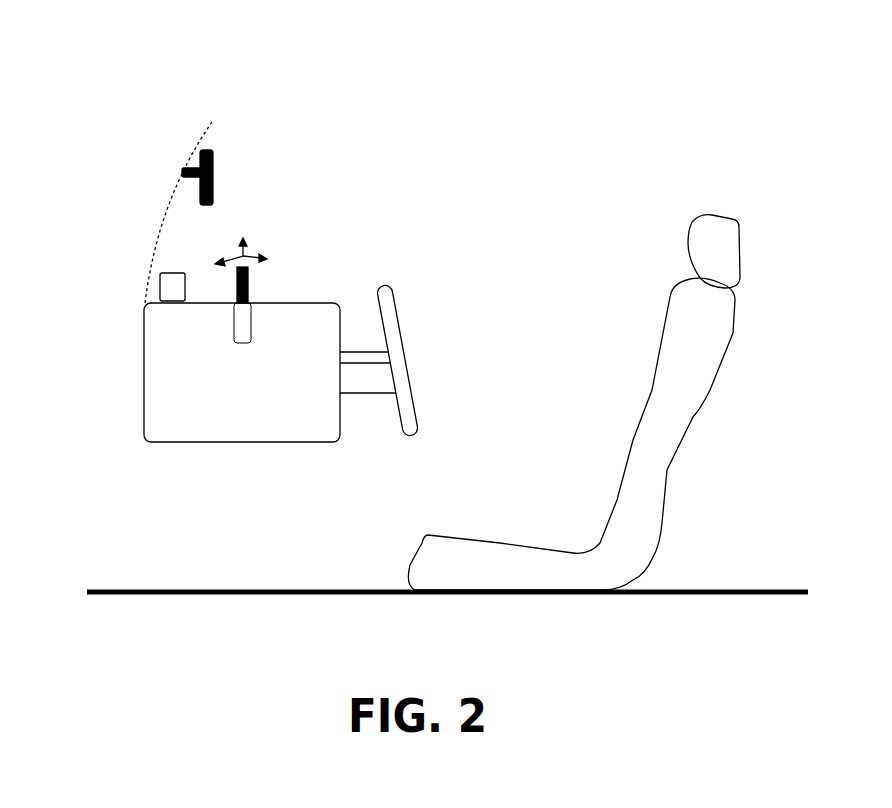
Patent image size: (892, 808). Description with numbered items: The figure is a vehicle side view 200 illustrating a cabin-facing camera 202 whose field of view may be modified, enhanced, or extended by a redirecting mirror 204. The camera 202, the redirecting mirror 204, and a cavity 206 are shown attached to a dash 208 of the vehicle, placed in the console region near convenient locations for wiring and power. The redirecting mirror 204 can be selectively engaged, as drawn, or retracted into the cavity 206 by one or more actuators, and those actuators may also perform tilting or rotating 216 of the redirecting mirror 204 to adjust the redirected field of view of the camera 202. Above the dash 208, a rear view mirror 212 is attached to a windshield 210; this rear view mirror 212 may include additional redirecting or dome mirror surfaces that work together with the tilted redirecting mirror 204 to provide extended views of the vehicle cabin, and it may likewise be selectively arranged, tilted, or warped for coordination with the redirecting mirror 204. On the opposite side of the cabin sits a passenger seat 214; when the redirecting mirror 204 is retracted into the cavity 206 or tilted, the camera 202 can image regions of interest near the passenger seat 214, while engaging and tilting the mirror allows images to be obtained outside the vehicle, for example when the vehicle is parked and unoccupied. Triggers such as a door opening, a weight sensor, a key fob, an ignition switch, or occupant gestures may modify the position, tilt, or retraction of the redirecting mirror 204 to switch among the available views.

The vehicle side view 200 is at (298, 54).
The cabin-facing camera 202 is at (172, 272).
The redirecting mirror 204 is at (250, 290).
The cavity 206 is at (255, 330).
The dash 208 is at (145, 372).
The windshield 210 is at (167, 210).
The rear view mirror 212 is at (215, 158).
The passenger seat 214 is at (670, 295).
The tilting or rotating 216 is at (250, 255).